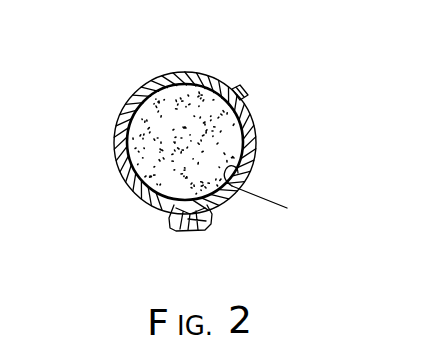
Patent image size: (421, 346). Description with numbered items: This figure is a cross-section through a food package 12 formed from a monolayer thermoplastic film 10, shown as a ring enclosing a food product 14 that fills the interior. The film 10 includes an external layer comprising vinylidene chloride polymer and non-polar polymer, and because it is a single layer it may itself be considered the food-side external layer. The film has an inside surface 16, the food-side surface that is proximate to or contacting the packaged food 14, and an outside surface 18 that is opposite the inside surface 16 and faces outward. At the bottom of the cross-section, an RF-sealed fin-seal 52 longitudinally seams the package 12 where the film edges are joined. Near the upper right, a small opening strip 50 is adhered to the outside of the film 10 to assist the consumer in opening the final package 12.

The film 10 is at (121, 119).
The package 12 is at (214, 66).
The food product 14 is at (152, 158).
The inside surface 16 is at (270, 200).
The outside surface 18 is at (256, 141).
The opening strip 50 is at (246, 92).
The RF-sealed fin-seal 52 is at (191, 231).